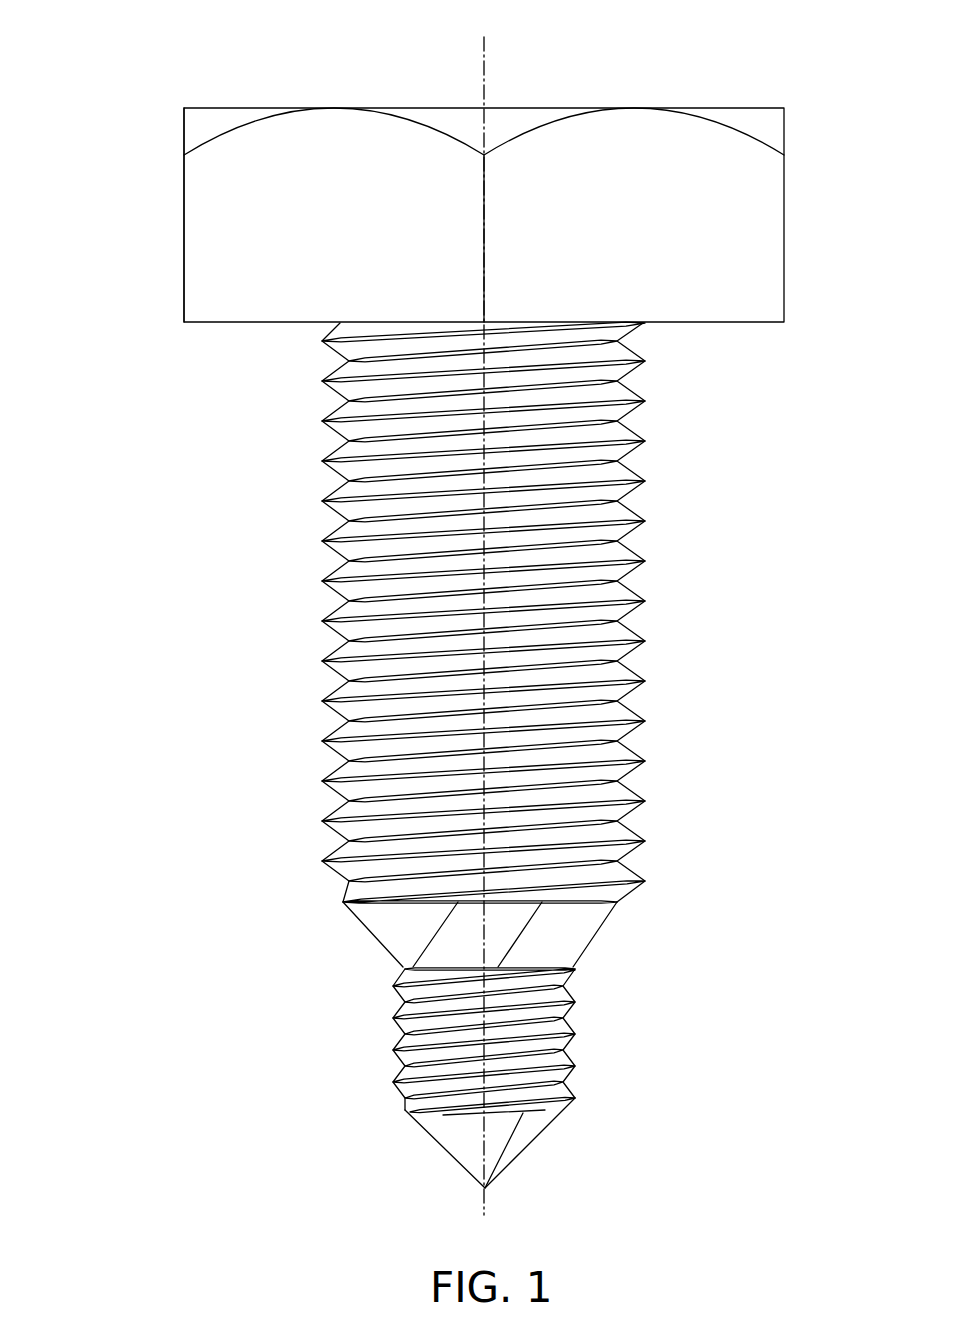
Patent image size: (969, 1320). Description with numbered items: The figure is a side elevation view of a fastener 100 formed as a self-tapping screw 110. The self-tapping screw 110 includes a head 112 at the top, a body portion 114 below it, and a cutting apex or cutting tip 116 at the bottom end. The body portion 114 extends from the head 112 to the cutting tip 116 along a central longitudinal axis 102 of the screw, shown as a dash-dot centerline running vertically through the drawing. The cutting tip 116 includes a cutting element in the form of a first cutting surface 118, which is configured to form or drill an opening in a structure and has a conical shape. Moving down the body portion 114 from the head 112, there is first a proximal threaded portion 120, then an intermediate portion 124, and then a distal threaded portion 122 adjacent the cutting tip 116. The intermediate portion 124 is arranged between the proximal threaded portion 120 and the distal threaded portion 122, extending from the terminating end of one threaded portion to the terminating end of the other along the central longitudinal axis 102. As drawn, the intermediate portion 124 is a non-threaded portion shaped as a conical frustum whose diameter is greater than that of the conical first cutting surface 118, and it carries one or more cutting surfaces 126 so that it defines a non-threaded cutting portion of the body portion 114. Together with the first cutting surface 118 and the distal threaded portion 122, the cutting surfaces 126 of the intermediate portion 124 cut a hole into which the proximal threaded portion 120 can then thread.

The fastener 100 is at (190, 57).
The central longitudinal axis 102 is at (486, 72).
The self-tapping screw 110 is at (133, 195).
The head 112 is at (184, 250).
The body portion 114 is at (270, 322).
The cutting tip 116 is at (442, 1168).
The first cutting surface 118 is at (522, 1140).
The proximal threaded portion 120 is at (648, 553).
The distal threaded portion 122 is at (590, 1037).
The intermediate portion 124 is at (592, 950).
The cutting surfaces 126 is at (585, 925).